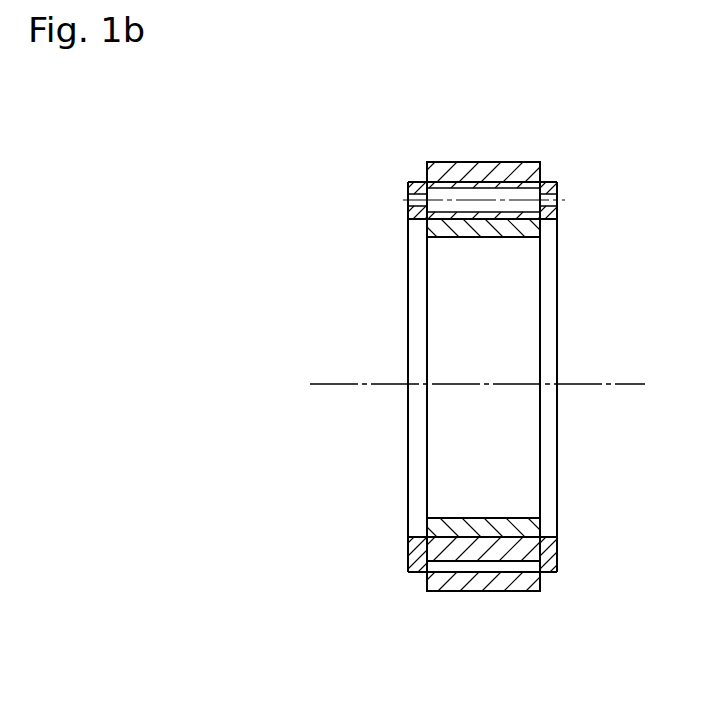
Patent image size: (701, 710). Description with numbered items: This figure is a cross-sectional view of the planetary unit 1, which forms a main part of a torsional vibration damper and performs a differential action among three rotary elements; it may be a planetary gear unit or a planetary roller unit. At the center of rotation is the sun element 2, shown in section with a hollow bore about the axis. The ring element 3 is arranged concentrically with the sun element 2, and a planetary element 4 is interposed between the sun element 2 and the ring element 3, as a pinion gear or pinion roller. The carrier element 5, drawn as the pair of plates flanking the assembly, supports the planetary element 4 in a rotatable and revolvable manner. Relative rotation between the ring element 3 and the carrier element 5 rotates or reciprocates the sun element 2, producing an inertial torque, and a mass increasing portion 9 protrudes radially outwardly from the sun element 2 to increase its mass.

The planetary unit 1 is at (555, 142).
The sun element 2 is at (486, 238).
The ring element 3 is at (460, 162).
The planetary element 4 is at (443, 184).
The carrier element 5 is at (408, 290).
The mass increasing portion 9 is at (478, 550).